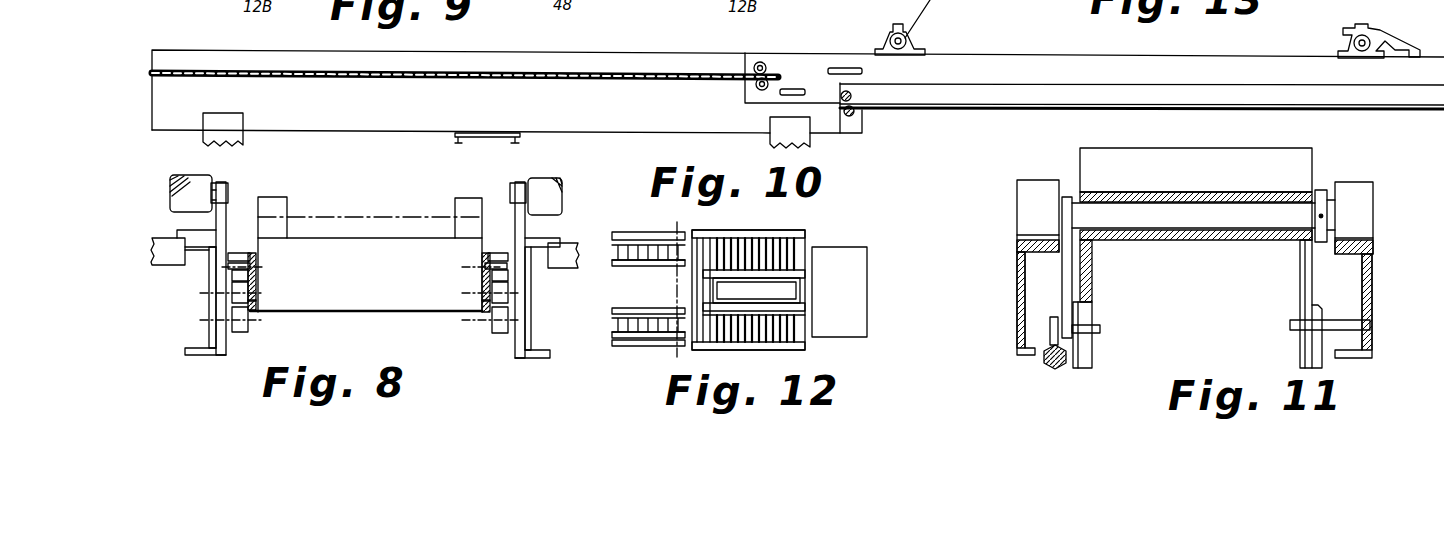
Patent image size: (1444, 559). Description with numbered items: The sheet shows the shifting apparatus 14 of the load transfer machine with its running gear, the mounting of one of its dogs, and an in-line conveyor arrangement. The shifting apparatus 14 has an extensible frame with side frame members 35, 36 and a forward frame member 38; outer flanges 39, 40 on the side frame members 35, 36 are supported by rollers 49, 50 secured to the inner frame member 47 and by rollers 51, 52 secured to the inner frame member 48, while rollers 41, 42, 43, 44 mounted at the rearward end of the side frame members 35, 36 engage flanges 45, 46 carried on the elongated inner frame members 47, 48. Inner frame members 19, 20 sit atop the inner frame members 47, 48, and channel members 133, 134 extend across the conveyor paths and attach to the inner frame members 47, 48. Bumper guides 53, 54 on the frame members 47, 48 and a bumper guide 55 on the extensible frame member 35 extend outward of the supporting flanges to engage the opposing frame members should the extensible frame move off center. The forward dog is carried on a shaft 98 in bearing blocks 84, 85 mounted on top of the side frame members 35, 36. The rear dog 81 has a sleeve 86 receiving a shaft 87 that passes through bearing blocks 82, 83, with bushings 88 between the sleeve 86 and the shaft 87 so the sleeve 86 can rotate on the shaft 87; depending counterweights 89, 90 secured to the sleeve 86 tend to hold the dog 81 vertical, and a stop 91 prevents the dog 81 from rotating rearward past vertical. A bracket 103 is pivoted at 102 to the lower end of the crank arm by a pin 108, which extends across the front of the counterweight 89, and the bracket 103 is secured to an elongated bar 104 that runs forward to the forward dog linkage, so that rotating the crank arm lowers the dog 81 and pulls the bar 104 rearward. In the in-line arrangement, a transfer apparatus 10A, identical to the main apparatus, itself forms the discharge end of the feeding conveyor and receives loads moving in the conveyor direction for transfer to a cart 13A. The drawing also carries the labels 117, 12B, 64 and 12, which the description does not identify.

In FIG. 10, the rail 117 is at (163, 44).
In FIG. 10, the support block 12B is at (243, 125).
In FIG. 10, the inner frame member 48 is at (404, 117).
In FIG. 8, the inner frame member 48 is at (520, 358).
In FIG. 10, the guide plate 64 is at (487, 130).
In FIG. 10, the flange 45 is at (565, 78).
In FIG. 8, the flange 45 is at (232, 279).
In FIG. 10, the roller 41 is at (764, 60).
In FIG. 8, the roller 41 is at (246, 252).
In FIG. 10, the roller 42 is at (757, 88).
In FIG. 8, the roller 42 is at (256, 276).
In FIG. 10, the bumper guide 55 is at (793, 85).
In FIG. 10, the bumper guide 53 is at (843, 66).
In FIG. 8, the bumper guide 53 is at (252, 262).
In FIG. 10, the bearing block 82 is at (915, 45).
In FIG. 11, the bearing block 82 is at (1019, 198).
In FIG. 10, the shifting apparatus 14 is at (1010, 40).
In FIG. 8, the shifting apparatus 14 is at (384, 182).
In FIG. 11, the shifting apparatus 14 is at (1204, 322).
In FIG. 10, the side frame member 35 is at (1122, 70).
In FIG. 11, the side frame member 35 is at (1017, 278).
In FIG. 10, the roller 49 is at (852, 96).
In FIG. 8, the roller 49 is at (232, 296).
In FIG. 10, the roller 50 is at (856, 112).
In FIG. 8, the roller 50 is at (238, 332).
In FIG. 10, the frame 12 is at (866, 134).
In FIG. 8, the frame 12 is at (210, 376).
In FIG. 10, the outer flange 39 is at (1183, 109).
In FIG. 8, the outer flange 39 is at (256, 310).
In FIG. 10, the bearing block 84 is at (1355, 59).
In FIG. 8, the bearing block 84 is at (270, 205).
In FIG. 10, the shaft 98 is at (1372, 30).
In FIG. 8, the inner frame member 19 is at (220, 182).
In FIG. 8, the inner frame member 20 is at (522, 182).
In FIG. 8, the channel member 133 is at (160, 250).
In FIG. 8, the channel member 134 is at (568, 246).
In FIG. 8, the bearing block 85 is at (468, 205).
In FIG. 8, the forward frame member 38 is at (366, 264).
In FIG. 8, the roller 43 is at (495, 253).
In FIG. 8, the bumper guide 54 is at (485, 266).
In FIG. 8, the flange 46 is at (486, 284).
In FIG. 8, the roller 44 is at (508, 284).
In FIG. 8, the roller 51 is at (492, 300).
In FIG. 8, the outer flange 40 is at (482, 318).
In FIG. 8, the roller 52 is at (500, 333).
In FIG. 8, the inner frame member 47 is at (206, 350).
In FIG. 12, the transfer apparatus 10A is at (778, 232).
In FIG. 12, the cart 13A is at (817, 256).
In FIG. 11, the rear dog 81 is at (1300, 158).
In FIG. 11, the bearing block 83 is at (1372, 200).
In FIG. 11, the shaft 87 is at (1193, 215).
In FIG. 11, the bushing 88 is at (1104, 238).
In FIG. 11, the sleeve 86 is at (1200, 238).
In FIG. 11, the side frame member 36 is at (1373, 268).
In FIG. 11, the counterweight 89 is at (1082, 368).
In FIG. 11, the counterweight 90 is at (1306, 368).
In FIG. 11, the stop 91 is at (1370, 325).
In FIG. 11, the pivot 102 is at (1050, 316).
In FIG. 11, the bracket 103 is at (1054, 317).
In FIG. 11, the elongated bar 104 is at (1050, 366).
In FIG. 11, the pin 108 is at (1100, 329).